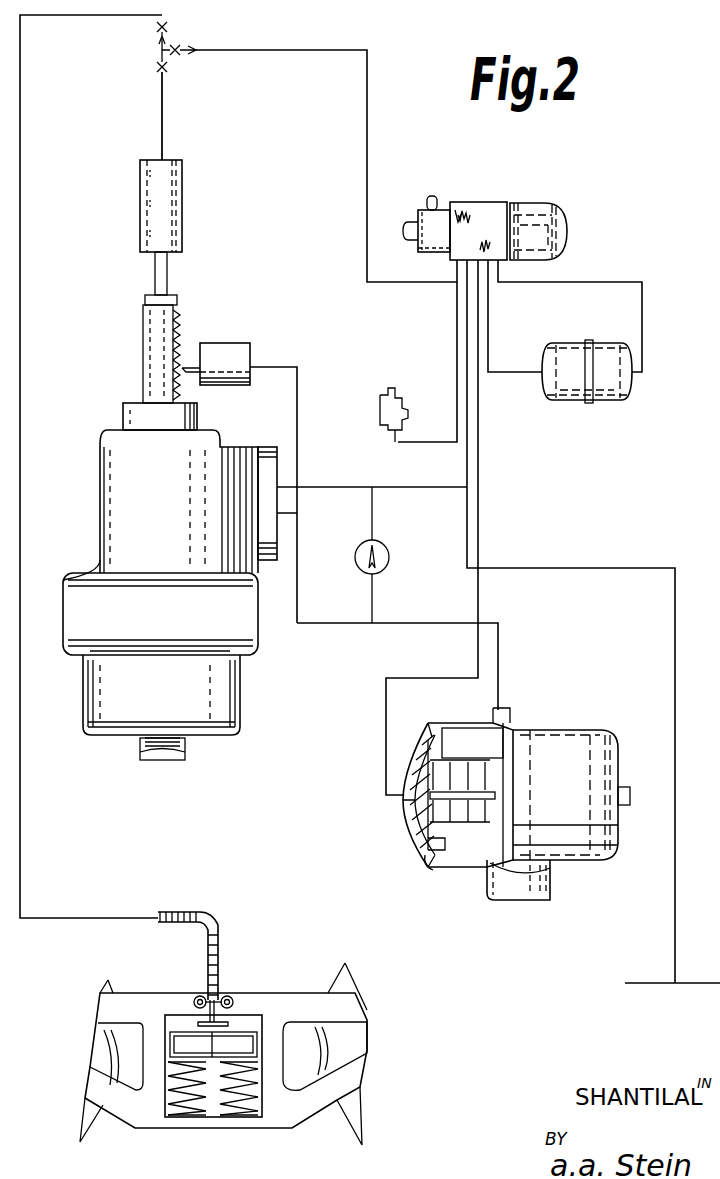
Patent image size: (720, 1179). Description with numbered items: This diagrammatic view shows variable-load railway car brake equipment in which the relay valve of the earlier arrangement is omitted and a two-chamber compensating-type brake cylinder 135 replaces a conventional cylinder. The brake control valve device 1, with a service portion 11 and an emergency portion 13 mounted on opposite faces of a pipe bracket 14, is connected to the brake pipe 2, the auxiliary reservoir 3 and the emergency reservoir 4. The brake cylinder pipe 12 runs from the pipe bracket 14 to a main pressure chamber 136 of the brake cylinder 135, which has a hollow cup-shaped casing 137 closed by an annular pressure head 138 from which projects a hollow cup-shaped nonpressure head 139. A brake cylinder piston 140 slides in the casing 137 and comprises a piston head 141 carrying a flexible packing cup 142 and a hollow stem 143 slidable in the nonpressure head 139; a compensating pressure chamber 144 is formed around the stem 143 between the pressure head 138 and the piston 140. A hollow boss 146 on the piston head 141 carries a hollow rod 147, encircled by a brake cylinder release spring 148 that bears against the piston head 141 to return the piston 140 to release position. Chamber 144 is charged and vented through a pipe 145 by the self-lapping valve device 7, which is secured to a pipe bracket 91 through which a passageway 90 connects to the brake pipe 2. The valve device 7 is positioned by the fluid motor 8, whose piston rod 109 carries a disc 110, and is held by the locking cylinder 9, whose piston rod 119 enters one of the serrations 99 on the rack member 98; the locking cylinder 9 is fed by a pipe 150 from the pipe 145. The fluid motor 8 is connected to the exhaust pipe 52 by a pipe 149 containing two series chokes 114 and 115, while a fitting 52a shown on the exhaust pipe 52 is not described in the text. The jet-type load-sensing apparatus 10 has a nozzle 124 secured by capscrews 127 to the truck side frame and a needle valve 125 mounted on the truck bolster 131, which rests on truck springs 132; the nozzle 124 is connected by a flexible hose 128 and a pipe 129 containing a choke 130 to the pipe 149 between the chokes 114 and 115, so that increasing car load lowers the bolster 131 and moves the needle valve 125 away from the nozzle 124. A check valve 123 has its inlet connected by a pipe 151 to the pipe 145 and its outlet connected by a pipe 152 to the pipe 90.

The brake control valve device 1 is at (474, 178).
The brake pipe 2 is at (466, 462).
The auxiliary reservoir 3 is at (570, 340).
The emergency reservoir 4 is at (590, 340).
The self-lapping valve device 7 is at (240, 677).
The fluid motor 8 is at (184, 176).
The locking cylinder 9 is at (231, 328).
The jet-type load-sensing apparatus 10 is at (148, 979).
The service portion 11 is at (420, 248).
The brake cylinder pipe 12 is at (480, 464).
The emergency portion 13 is at (556, 260).
The pipe bracket 14 is at (460, 250).
The exhaust pipe 52 is at (455, 305).
The manual valve 52a is at (380, 412).
The passageway and pipe 90 is at (396, 482).
The pipe bracket 91 is at (270, 558).
The rack member 98 is at (145, 342).
The serrations 99 is at (180, 312).
The piston rod 109 is at (155, 266).
The disc 110 is at (145, 300).
The choke 114 is at (155, 67).
The choke 115 is at (186, 42).
The piston rod 119 is at (188, 360).
The check valve 123 is at (384, 565).
The nozzle 124 is at (233, 1005).
The needle valve 125 is at (208, 1022).
The capscrews 127 is at (235, 980).
The flexible hose 128 is at (220, 940).
The pipe 129 is at (78, 16).
The choke 130 is at (155, 30).
The truck bolster 131 is at (215, 1050).
The truck springs 132 is at (225, 1105).
The compensating-type brake cylinder 135 is at (498, 903).
The main pressure chamber 136 is at (420, 735).
The hollow cup-shaped casing 137 is at (500, 716).
The annular pressure head 138 is at (505, 720).
The hollow cup-shaped nonpressure head 139 is at (598, 745).
The brake cylinder piston 140 is at (485, 878).
The piston head 141 is at (430, 870).
The flexible packing cup 142 is at (420, 812).
The hollow stem 143 is at (455, 738).
The compensating pressure chamber 144 is at (500, 735).
The pipe 145 is at (287, 515).
The hollow boss 146 is at (428, 843).
The hollow rod 147 is at (496, 797).
The brake cylinder release spring 148 is at (488, 778).
The pipe 149 is at (248, 52).
The pipe 150 is at (298, 395).
The pipe 151 is at (374, 604).
The pipe 152 is at (374, 515).